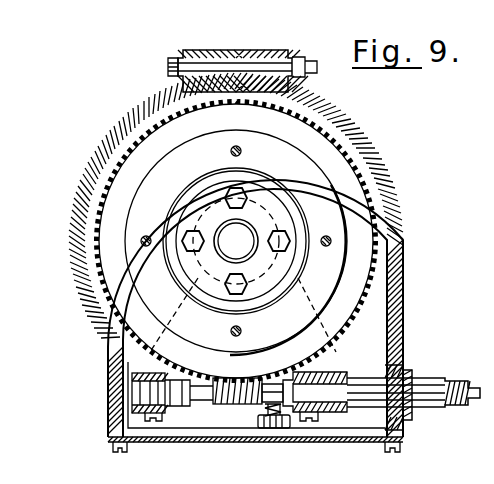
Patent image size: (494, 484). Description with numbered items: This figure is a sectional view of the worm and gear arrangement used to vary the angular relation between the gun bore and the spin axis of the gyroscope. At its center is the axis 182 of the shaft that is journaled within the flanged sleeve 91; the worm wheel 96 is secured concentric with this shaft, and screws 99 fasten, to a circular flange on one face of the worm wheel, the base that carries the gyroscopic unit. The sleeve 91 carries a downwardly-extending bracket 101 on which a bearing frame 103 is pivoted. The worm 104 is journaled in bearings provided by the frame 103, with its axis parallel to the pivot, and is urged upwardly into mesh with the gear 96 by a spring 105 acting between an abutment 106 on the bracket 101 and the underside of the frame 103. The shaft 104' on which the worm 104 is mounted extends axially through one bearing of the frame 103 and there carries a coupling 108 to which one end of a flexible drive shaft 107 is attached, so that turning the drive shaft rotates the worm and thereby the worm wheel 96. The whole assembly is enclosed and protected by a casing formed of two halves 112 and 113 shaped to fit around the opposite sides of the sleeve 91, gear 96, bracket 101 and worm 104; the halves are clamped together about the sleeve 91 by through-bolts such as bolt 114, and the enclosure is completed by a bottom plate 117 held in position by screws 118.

The flanged sleeve 91 is at (270, 213).
The worm wheel 96 is at (365, 196).
The screws 99 is at (230, 151).
The bracket 101 is at (318, 352).
The bearing frame 103 is at (138, 375).
The worm 104 is at (241, 374).
The worm shaft 104' is at (181, 421).
The spring 105 is at (262, 404).
The abutment 106 is at (272, 430).
The flexible drive shaft 107 is at (463, 400).
The coupling 108 is at (331, 377).
The casing half 112 is at (72, 260).
The casing half 113 is at (399, 253).
The through-bolt 114 is at (168, 67).
The bottom plate 117 is at (162, 443).
The screws 118 is at (116, 452).
The axis of shaft 93 182 is at (236, 250).